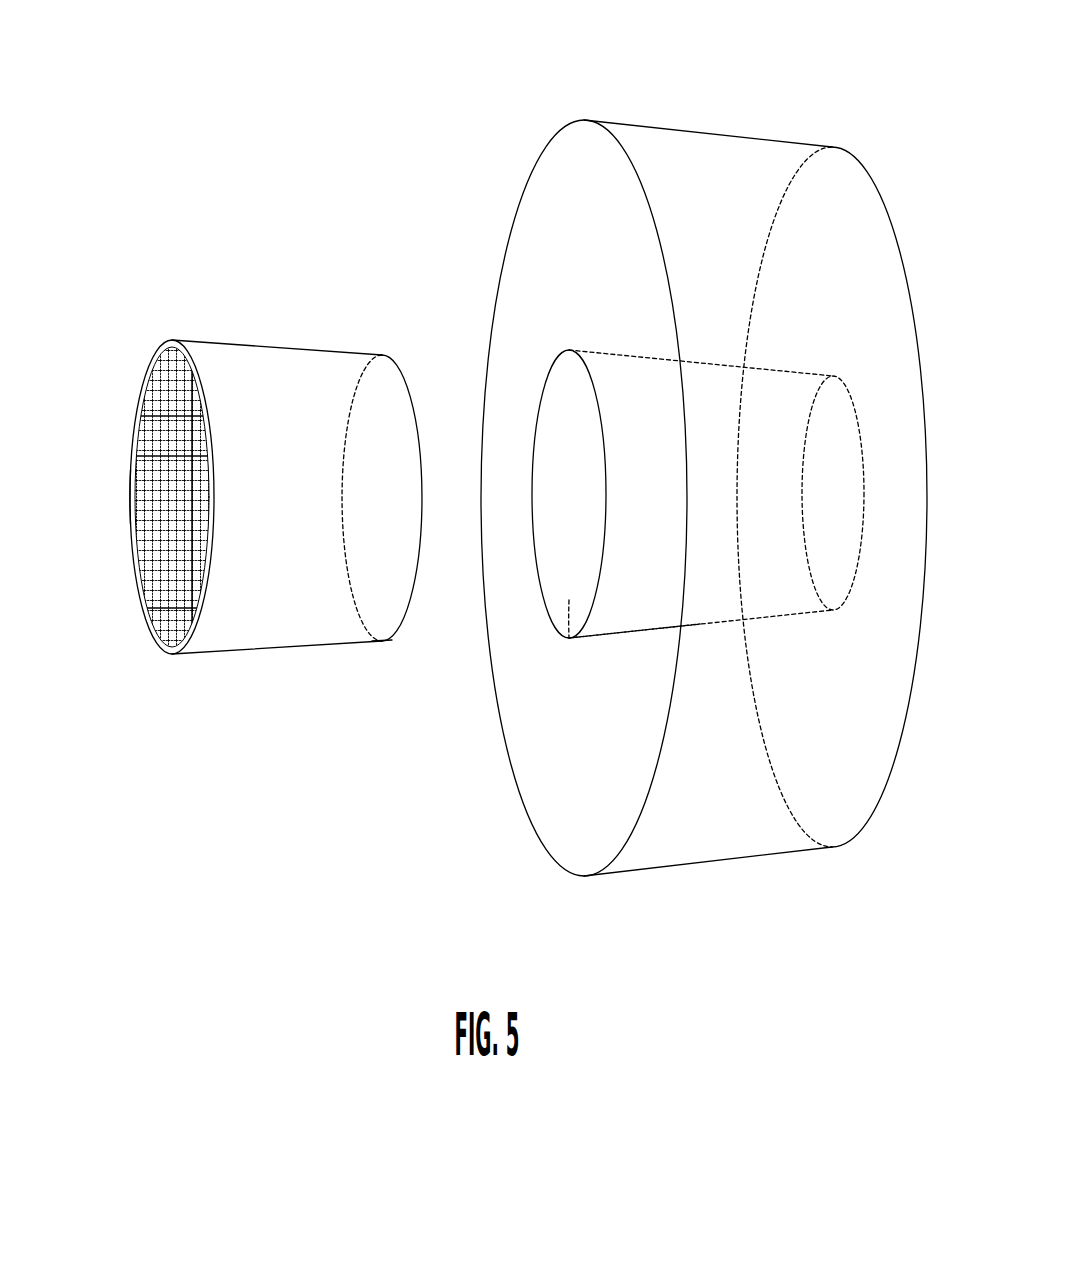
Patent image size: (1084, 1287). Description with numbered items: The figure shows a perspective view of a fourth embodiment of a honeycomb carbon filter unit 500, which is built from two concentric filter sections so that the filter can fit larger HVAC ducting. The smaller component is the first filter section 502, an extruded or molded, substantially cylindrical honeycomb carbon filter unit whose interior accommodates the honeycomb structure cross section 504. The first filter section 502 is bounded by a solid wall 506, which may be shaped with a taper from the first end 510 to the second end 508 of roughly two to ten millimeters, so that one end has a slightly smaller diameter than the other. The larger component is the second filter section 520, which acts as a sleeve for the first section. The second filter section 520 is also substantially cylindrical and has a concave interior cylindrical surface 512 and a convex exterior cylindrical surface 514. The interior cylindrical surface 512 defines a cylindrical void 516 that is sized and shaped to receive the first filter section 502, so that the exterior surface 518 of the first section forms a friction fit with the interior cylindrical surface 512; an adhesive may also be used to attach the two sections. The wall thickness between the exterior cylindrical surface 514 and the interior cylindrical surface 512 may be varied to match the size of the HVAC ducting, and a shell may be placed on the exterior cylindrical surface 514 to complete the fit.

The honeycomb carbon filter unit 500 is at (373, 208).
The first filter section 502 is at (240, 740).
The honeycomb structure cross section 504 is at (160, 543).
The solid wall 506 is at (182, 353).
The second end 508 is at (126, 545).
The first end 510 is at (388, 648).
The interior cylindrical surface 512 is at (558, 497).
The exterior cylindrical surface 514 is at (693, 243).
The cylindrical void 516 is at (565, 545).
The exterior surface 518 is at (267, 488).
The second filter section 520 is at (737, 903).